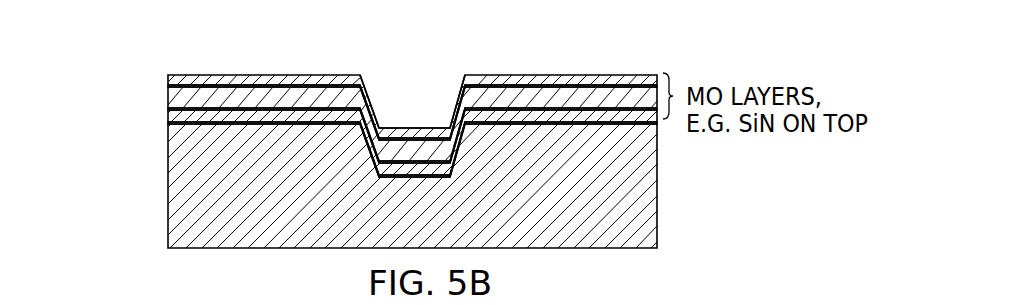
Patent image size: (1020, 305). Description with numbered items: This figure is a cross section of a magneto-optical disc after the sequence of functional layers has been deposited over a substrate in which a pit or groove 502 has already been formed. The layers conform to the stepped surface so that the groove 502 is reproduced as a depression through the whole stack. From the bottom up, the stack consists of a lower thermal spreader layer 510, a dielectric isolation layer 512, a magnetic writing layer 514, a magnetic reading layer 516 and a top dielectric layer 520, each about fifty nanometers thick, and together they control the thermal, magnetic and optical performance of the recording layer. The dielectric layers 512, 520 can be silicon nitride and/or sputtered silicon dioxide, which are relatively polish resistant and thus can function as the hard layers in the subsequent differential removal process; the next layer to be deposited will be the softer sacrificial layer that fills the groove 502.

The pit or groove 502 is at (415, 113).
The lower thermal spreader layer 510 is at (167, 126).
The dielectric isolation layer 512 is at (167, 124).
The magnetic writing layer 514 is at (167, 115).
The magnetic reading layer 516 is at (167, 86).
The top dielectric layer 520 is at (167, 78).